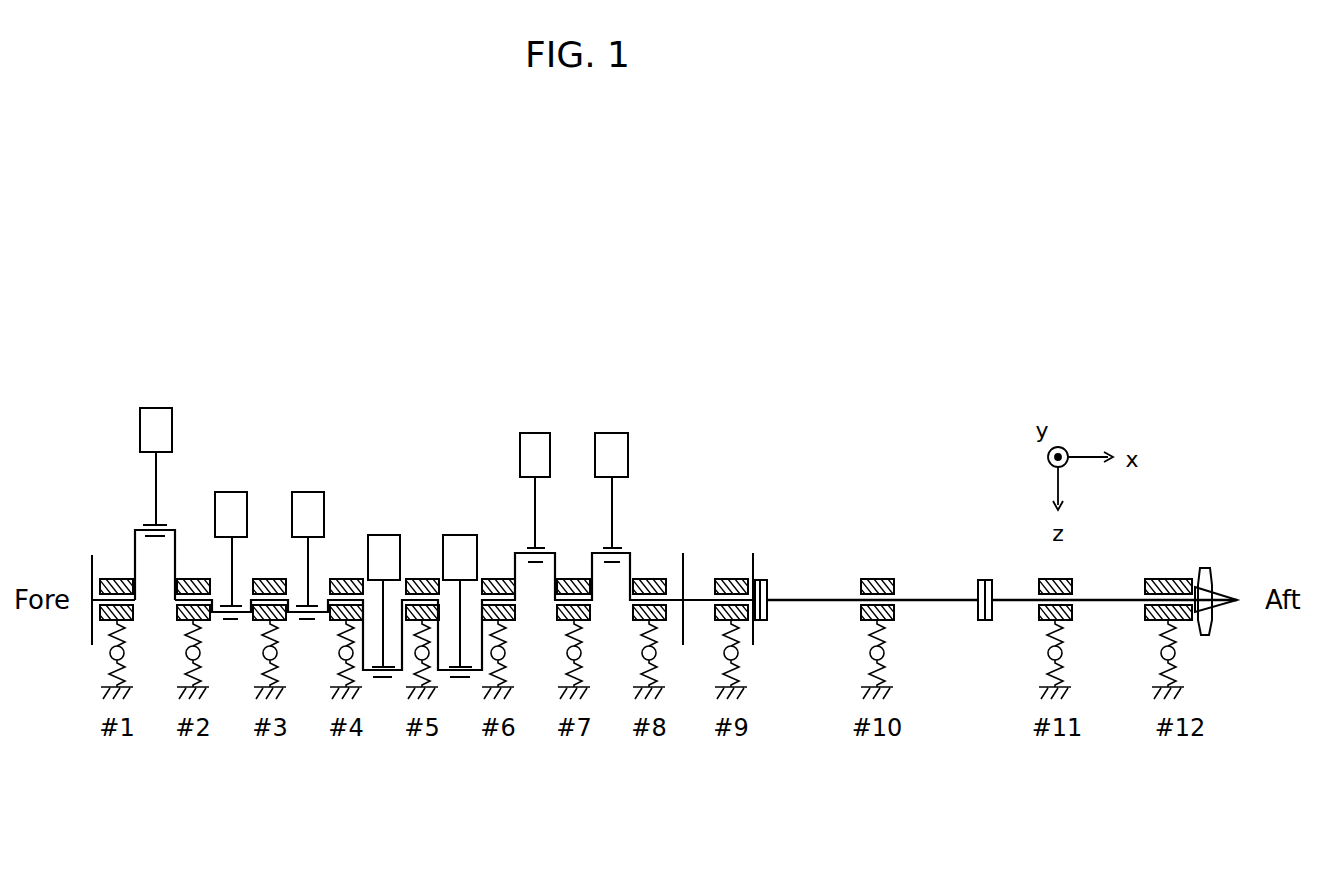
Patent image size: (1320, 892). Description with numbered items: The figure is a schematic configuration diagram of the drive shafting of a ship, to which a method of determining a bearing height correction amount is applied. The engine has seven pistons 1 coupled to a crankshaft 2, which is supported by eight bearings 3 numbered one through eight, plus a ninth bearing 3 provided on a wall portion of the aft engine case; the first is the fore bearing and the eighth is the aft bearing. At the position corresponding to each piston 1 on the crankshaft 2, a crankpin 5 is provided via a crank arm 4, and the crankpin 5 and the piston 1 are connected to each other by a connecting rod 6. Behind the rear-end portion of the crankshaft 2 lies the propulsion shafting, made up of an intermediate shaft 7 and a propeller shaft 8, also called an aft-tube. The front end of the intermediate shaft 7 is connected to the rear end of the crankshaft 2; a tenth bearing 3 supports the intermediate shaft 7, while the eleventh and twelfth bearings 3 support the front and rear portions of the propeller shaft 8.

The piston 1 is at (152, 408).
The crankshaft 2 is at (699, 592).
The bearing 3 is at (631, 619).
The crank arm 4 is at (133, 563).
The crankpin 5 is at (140, 525).
The connecting rod 6 is at (153, 495).
The intermediate shaft 7 is at (928, 600).
The propeller shaft 8 is at (1018, 600).